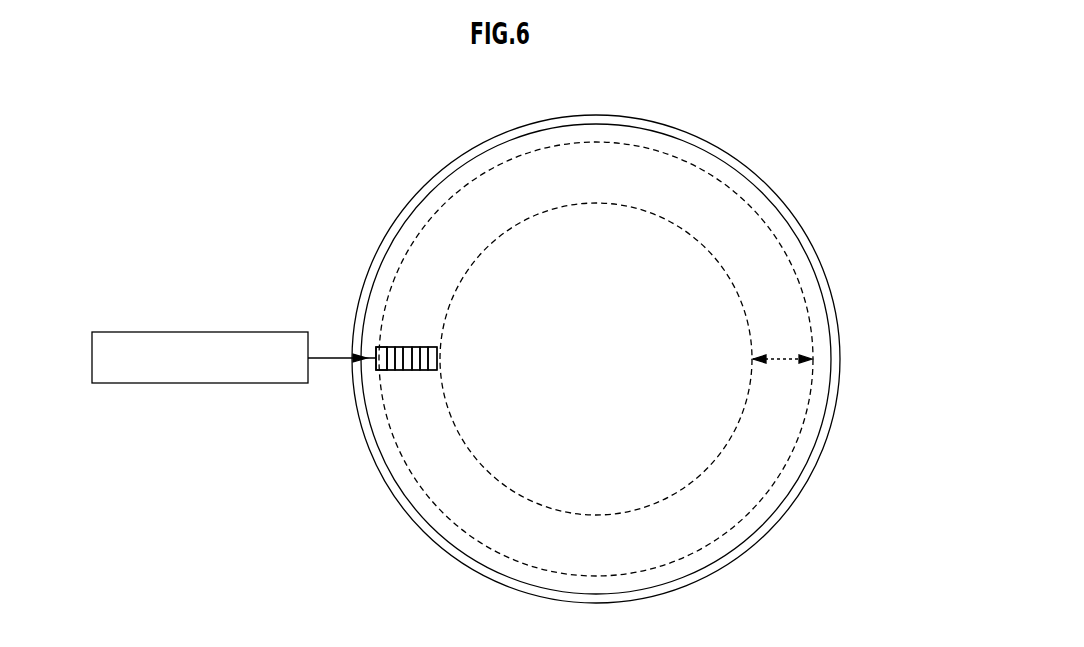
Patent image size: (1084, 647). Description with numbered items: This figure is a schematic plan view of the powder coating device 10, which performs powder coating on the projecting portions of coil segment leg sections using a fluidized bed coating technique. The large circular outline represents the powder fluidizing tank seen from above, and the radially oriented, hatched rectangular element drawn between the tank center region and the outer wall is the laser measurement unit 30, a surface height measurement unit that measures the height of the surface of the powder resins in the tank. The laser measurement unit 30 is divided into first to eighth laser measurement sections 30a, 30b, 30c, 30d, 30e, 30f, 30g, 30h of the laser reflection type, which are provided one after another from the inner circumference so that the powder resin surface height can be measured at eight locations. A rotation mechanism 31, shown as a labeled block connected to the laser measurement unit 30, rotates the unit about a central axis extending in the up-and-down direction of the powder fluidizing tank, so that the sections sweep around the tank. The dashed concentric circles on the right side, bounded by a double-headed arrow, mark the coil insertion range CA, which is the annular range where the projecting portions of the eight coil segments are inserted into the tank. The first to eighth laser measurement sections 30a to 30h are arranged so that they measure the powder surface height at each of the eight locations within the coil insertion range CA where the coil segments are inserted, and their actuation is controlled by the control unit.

The powder coating device 10 is at (352, 173).
The laser measurement unit 30 is at (456, 358).
The first laser measurement section 30a is at (431, 346).
The second laser measurement section 30b is at (426, 371).
The third laser measurement section 30c is at (417, 346).
The fourth laser measurement section 30d is at (408, 371).
The fifth laser measurement section 30e is at (400, 346).
The sixth laser measurement section 30f is at (393, 371).
The seventh laser measurement section 30g is at (377, 346).
The eighth laser measurement section 30h is at (380, 371).
The rotation mechanism 31 is at (259, 332).
The coil insertion range CA is at (783, 359).